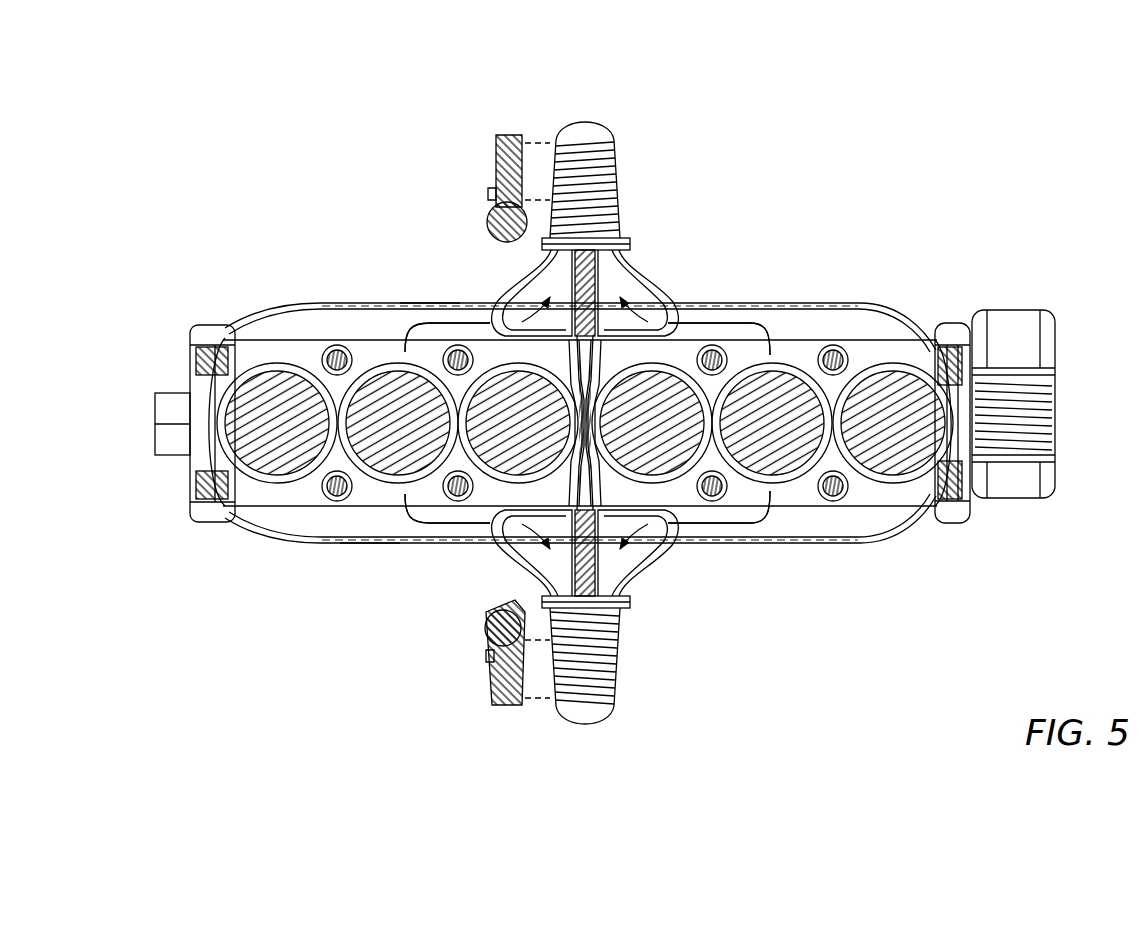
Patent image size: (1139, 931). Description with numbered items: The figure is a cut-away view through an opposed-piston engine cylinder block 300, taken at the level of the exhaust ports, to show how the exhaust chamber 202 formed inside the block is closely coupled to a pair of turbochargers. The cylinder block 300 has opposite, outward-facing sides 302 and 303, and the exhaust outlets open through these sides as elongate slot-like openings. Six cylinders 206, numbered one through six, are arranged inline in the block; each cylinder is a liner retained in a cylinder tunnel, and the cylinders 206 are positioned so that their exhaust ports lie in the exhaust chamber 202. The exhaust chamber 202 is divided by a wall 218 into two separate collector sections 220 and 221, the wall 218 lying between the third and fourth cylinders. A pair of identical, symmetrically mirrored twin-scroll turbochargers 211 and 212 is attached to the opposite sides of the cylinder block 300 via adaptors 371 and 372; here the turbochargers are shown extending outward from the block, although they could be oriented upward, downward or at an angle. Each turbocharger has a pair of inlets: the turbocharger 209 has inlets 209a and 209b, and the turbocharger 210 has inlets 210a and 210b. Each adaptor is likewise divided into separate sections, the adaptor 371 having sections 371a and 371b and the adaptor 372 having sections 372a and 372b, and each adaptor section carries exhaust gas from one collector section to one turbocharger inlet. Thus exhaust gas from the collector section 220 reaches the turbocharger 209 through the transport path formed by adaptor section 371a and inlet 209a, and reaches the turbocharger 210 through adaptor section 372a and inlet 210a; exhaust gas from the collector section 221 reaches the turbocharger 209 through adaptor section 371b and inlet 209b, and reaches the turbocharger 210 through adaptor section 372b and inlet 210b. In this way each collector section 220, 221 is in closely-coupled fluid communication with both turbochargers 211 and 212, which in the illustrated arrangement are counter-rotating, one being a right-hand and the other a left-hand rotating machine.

The cylinder block 300 is at (918, 185).
The outward-facing side 302 is at (420, 268).
The outward-facing side 303 is at (373, 593).
The exhaust chamber 202 is at (817, 350).
The cylinders 206 is at (277, 360).
The turbocharger 209 is at (617, 148).
The turbocharger inlet 209a is at (542, 290).
The turbocharger inlet 209b is at (627, 293).
The turbocharger 210 is at (565, 717).
The turbocharger inlet 210a is at (538, 547).
The turbocharger inlet 210b is at (620, 557).
The twin-scroll turbocharger 211 is at (525, 105).
The twin-scroll turbocharger 212 is at (618, 672).
The wall 218 is at (598, 357).
The collector section 220 is at (287, 493).
The collector section 221 is at (867, 352).
The adaptor 371 is at (852, 305).
The adaptor section 371a is at (399, 318).
The adaptor section 371b is at (773, 323).
The adaptor 372 is at (323, 540).
The adaptor section 372a is at (365, 525).
The adaptor section 372b is at (852, 523).